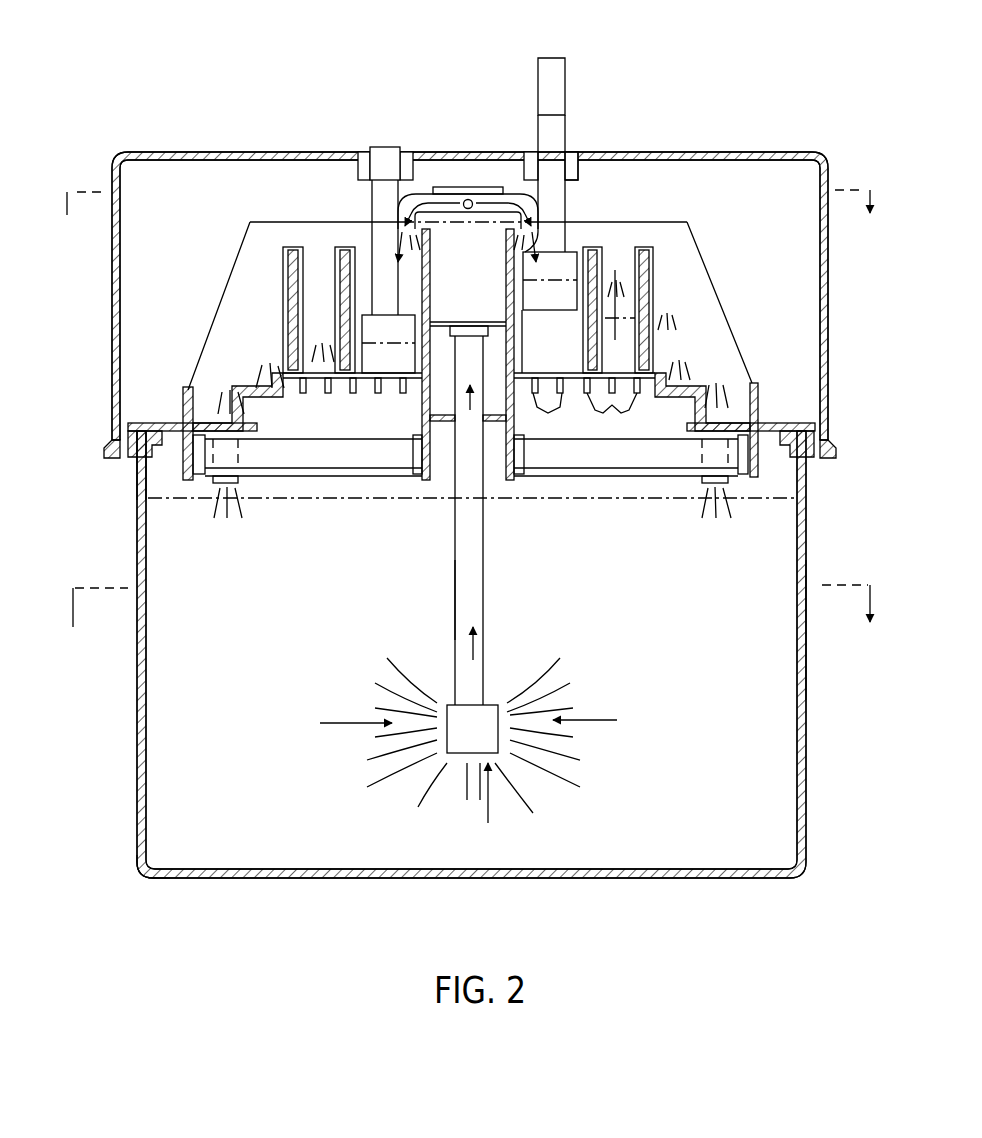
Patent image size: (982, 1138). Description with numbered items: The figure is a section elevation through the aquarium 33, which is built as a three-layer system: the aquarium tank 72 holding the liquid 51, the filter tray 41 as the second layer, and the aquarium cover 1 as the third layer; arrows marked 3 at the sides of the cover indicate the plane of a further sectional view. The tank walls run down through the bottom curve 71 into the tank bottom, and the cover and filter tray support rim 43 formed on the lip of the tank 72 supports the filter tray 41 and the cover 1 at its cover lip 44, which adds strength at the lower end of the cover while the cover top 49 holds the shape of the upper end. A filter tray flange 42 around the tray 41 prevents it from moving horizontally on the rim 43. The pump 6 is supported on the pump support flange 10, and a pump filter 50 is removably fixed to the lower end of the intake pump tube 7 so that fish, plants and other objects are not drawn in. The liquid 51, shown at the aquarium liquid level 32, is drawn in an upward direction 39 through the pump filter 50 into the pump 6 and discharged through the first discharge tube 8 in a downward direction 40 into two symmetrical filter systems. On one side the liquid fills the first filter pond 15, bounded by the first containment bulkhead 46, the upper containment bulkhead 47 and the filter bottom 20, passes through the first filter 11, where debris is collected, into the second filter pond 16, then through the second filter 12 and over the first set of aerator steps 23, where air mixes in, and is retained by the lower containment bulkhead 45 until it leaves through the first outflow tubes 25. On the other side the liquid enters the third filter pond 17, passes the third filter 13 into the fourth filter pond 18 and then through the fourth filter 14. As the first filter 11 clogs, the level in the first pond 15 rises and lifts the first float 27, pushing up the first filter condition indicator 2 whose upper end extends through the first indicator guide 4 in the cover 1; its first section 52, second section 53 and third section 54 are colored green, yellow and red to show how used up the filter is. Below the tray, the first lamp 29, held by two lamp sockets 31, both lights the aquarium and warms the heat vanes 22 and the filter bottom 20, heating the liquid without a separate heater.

The aquarium cover 1 is at (133, 152).
The first filter condition indicator 2 is at (552, 57).
The section line 3- 3 is at (393, 105).
The first indicator guide 4 is at (575, 185).
The pump 6 is at (443, 187).
The intake pump tube 7 is at (455, 597).
The first discharge tube 8 is at (478, 190).
The pump support flange 10 is at (495, 380).
The first filter 11 is at (582, 247).
The second filter 12 is at (693, 220).
The third filter 13 is at (353, 243).
The fourth filter 14 is at (293, 245).
The first filter pond 15 is at (565, 365).
The second filter pond 16 is at (625, 242).
The third filter pond 17 is at (375, 375).
The fourth filter pond 18 is at (327, 348).
The filter bottom 20 is at (642, 367).
The heat vanes 22 is at (585, 415).
The first set of aerator steps 23 is at (687, 390).
The first outflow tubes 25 is at (727, 487).
The first float 27 is at (570, 313).
The first lamp 29 is at (612, 470).
The lamp sockets 31 is at (525, 478).
The aquarium liquid level 32 is at (352, 498).
The aquarium 33 is at (806, 690).
The upward direction 39 is at (467, 403).
The downward direction 40 is at (405, 256).
The filter tray 41 is at (175, 423).
The filter tray flange 42 is at (167, 447).
The cover and filter tray support rim 43 is at (128, 455).
The cover lip 44 is at (112, 440).
The lower containment bulkhead 45 is at (185, 387).
The first containment bulkhead 46 is at (233, 267).
The upper containment bulkhead 47 is at (510, 287).
The cover top 49 is at (173, 152).
The pump filter 50 is at (467, 760).
The liquid 51 is at (225, 397).
The first section 52 is at (380, 147).
The second section 53 is at (362, 190).
The third section 54 is at (368, 233).
The bottom curve 71 is at (140, 880).
The aquarium tank 72 is at (806, 770).